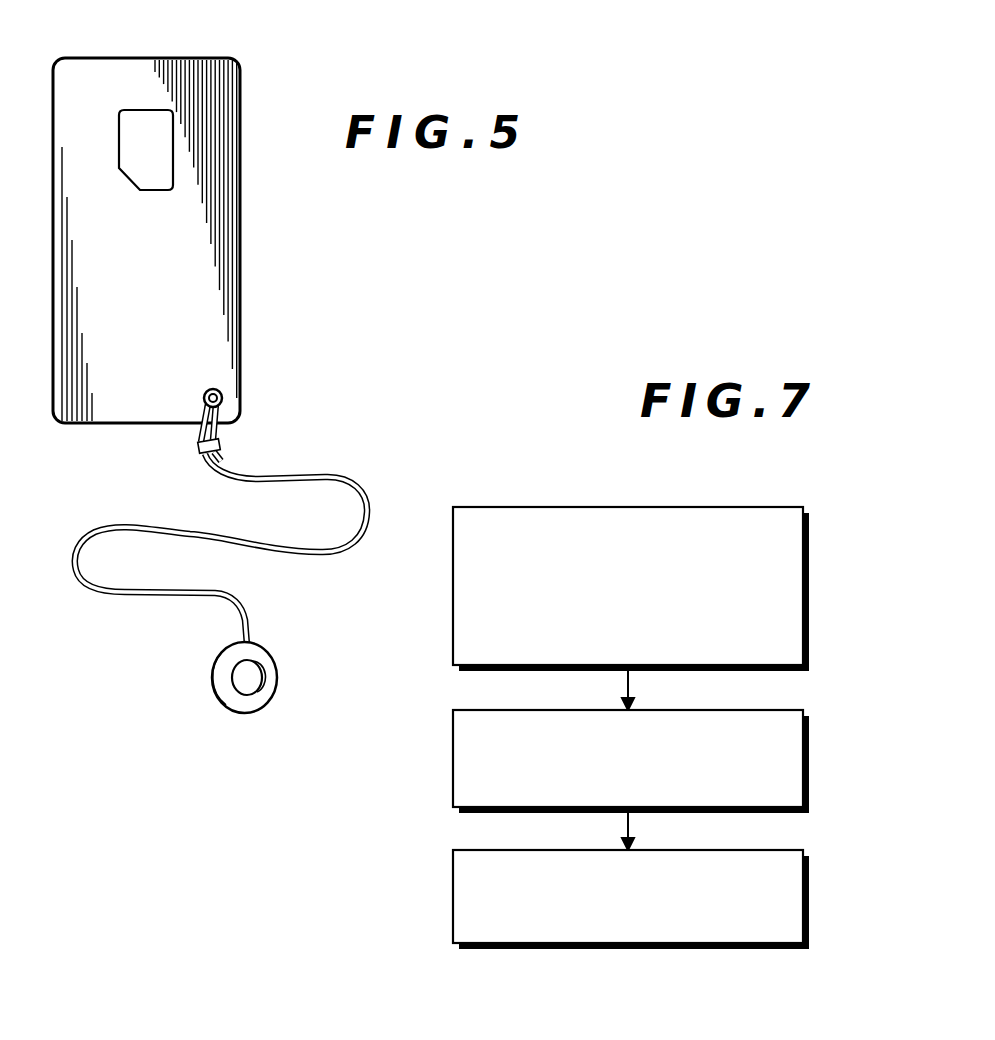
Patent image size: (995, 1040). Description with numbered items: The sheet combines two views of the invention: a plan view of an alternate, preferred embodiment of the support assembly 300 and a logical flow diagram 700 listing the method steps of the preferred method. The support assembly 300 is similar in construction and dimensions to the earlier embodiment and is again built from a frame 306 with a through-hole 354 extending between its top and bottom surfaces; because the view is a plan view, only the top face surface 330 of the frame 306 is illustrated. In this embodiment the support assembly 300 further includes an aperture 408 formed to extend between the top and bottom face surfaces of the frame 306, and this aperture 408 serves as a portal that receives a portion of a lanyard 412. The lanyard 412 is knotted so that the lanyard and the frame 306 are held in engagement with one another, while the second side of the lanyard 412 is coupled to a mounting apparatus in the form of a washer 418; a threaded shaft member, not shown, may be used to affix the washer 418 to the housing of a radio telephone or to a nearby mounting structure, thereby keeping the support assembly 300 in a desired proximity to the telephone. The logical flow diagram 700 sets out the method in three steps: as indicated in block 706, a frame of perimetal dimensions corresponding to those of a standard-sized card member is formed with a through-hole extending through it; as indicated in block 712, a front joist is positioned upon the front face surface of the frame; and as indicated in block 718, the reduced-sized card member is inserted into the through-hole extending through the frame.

In FIG. 5, the support assembly 300 is at (330, 87).
In FIG. 5, the frame 306 is at (240, 173).
In FIG. 5, the top face surface 330 is at (170, 285).
In FIG. 5, the through-hole 354 is at (150, 127).
In FIG. 5, the aperture 408 is at (222, 403).
In FIG. 5, the lanyard 412 is at (282, 477).
In FIG. 5, the washer 418 is at (226, 667).
In FIG. 7, the logical flow diagram 700 is at (843, 467).
In FIG. 7, the block 706 is at (810, 590).
In FIG. 7, the block 712 is at (812, 760).
In FIG. 7, the block 718 is at (812, 898).